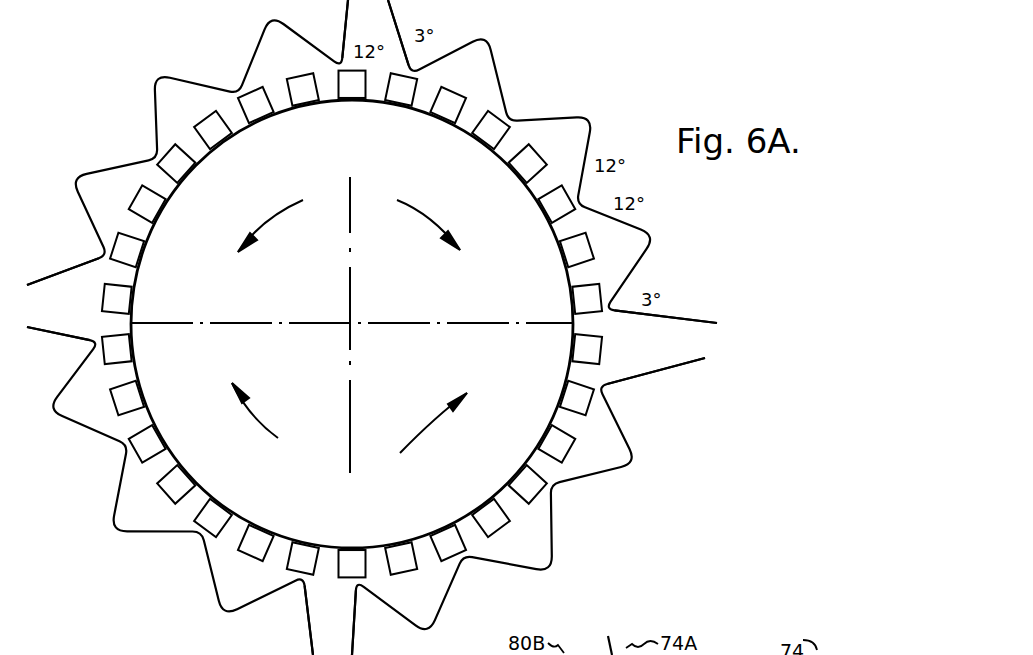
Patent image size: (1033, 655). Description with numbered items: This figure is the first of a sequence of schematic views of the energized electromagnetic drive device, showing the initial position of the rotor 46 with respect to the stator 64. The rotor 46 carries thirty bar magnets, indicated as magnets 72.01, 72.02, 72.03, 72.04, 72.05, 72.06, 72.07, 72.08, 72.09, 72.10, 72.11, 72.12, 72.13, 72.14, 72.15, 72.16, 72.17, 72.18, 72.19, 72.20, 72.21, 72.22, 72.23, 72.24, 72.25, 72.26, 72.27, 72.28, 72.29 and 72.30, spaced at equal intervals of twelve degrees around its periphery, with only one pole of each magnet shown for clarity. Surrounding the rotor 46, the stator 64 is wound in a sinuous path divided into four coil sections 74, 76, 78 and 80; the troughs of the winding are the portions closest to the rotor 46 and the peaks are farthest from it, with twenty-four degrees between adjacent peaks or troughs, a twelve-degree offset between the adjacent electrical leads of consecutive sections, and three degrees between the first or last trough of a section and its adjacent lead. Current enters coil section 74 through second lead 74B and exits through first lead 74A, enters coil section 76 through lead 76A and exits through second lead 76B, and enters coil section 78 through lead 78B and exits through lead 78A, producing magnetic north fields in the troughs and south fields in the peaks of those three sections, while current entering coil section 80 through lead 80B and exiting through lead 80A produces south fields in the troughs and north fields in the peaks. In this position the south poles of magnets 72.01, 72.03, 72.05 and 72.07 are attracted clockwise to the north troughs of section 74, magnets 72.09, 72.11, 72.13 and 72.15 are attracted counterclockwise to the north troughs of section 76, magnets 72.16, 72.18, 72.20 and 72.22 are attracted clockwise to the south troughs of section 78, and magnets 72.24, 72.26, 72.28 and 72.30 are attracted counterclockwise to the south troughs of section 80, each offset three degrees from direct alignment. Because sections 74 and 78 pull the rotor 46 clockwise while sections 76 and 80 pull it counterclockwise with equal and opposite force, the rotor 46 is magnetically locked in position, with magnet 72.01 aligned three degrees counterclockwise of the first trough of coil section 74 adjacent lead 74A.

The rotor 46 is at (482, 262).
The stator 64 is at (557, 67).
The coil section 74 is at (542, 125).
The first lead 74A is at (396, 16).
The second lead 74B is at (690, 323).
The coil section 76 is at (550, 575).
The lead 76A is at (694, 360).
The second lead 76B is at (355, 649).
The coil section 78 is at (153, 532).
The lead 78A is at (312, 646).
The lead 78B is at (38, 328).
The coil section 80 is at (111, 162).
The lead 80A is at (27, 285).
The lead 80B is at (346, 8).
The bar magnet 72.01 is at (394, 124).
The bar magnet 72.02 is at (434, 137).
The bar magnet 72.03 is at (470, 159).
The bar magnet 72.04 is at (502, 187).
The bar magnet 72.05 is at (526, 221).
The bar magnet 72.06 is at (543, 261).
The bar magnet 72.07 is at (552, 302).
The bar magnet 72.08 is at (552, 345).
The bar magnet 72.09 is at (543, 387).
The bar magnet 72.10 is at (526, 426).
The bar magnet 72.11 is at (502, 461).
The bar magnet 72.12 is at (470, 489).
The bar magnet 72.13 is at (434, 510).
The bar magnet 72.14 is at (394, 524).
The bar magnet 72.15 is at (352, 528).
The bar magnet 72.16 is at (310, 524).
The bar magnet 72.17 is at (270, 510).
The bar magnet 72.18 is at (233, 489).
The bar magnet 72.19 is at (202, 461).
The bar magnet 72.20 is at (177, 426).
The bar magnet 72.21 is at (160, 387).
The bar magnet 72.22 is at (151, 345).
The bar magnet 72.23 is at (151, 302).
The bar magnet 72.24 is at (160, 261).
The bar magnet 72.25 is at (177, 221).
The bar magnet 72.26 is at (202, 187).
The bar magnet 72.27 is at (233, 159).
The bar magnet 72.28 is at (270, 137).
The bar magnet 72.29 is at (310, 124).
The bar magnet 72.30 is at (352, 120).